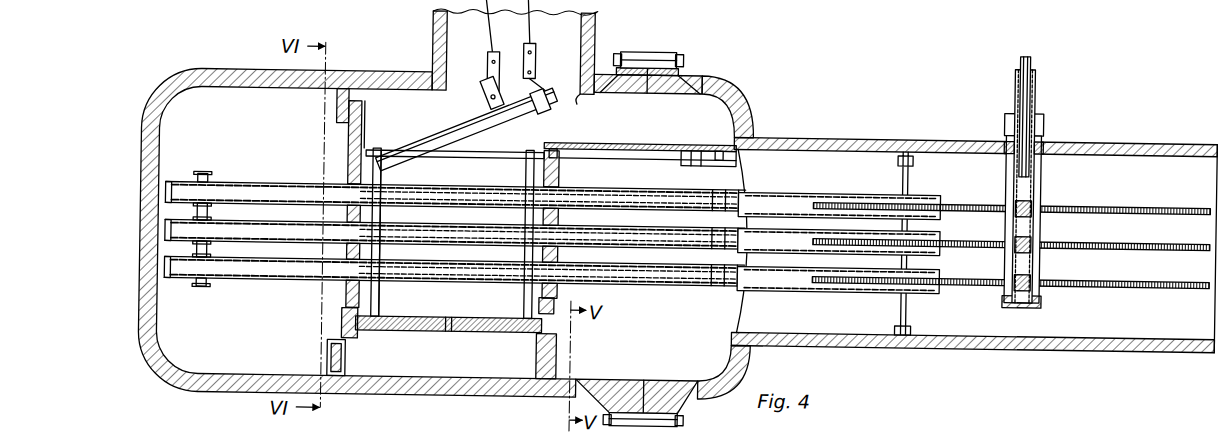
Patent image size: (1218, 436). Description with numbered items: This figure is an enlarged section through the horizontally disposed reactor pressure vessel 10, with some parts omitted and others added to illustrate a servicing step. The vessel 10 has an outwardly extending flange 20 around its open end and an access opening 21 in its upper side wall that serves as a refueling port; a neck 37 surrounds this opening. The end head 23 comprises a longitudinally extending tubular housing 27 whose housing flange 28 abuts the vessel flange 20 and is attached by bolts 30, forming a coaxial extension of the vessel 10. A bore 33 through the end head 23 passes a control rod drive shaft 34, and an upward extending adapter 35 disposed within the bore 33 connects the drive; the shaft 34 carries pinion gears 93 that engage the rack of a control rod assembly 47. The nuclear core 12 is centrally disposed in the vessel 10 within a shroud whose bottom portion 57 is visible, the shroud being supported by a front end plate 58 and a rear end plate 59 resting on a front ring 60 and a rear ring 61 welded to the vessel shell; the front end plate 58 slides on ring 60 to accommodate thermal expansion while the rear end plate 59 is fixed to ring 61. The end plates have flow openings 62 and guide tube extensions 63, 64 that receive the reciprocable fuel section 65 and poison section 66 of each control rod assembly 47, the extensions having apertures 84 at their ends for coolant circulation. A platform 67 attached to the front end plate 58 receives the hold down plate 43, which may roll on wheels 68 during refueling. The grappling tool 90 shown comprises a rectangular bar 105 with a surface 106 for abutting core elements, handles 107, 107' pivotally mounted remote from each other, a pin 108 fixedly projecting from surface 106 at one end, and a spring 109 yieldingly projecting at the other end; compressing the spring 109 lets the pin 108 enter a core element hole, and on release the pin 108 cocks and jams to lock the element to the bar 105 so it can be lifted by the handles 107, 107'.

The reactor pressure vessel 10 is at (214, 74).
The nuclear core 12 is at (474, 338).
The flange 20 is at (628, 52).
The access opening 21 is at (574, 92).
The end head 23 is at (744, 345).
The tubular housing 27 is at (955, 141).
The housing flange 28 is at (660, 51).
The bolts 30 is at (678, 58).
The bores 33 is at (1043, 148).
The control rod drive shaft 34 is at (1020, 163).
The adapter 35 is at (1044, 123).
The neck 37 is at (432, 37).
The hold down plate 43 is at (654, 143).
The control rod assembly 47 is at (1140, 272).
The bottom portion 57 is at (414, 336).
The front end plate 58 is at (560, 320).
The rear end plate 59 is at (342, 325).
The front ring 60 is at (560, 358).
The rear ring 61 is at (330, 355).
The flow openings 62 is at (346, 183).
The guide tube extension 63 is at (688, 210).
The guide tube extension 64 is at (246, 187).
The fuel section 65 is at (497, 200).
The poison section 66 is at (648, 208).
The platform 67 is at (712, 164).
The wheels 68 is at (557, 147).
The apertures 84 is at (944, 203).
The grappling tool 90 is at (481, 89).
The pinion gears 93 is at (1032, 240).
The rectangular bar 105 is at (539, 80).
The surface 106 is at (483, 110).
The handle 107 is at (552, 39).
The handle 107' is at (478, 46).
The pin 108 is at (547, 112).
The spring 109 is at (485, 97).